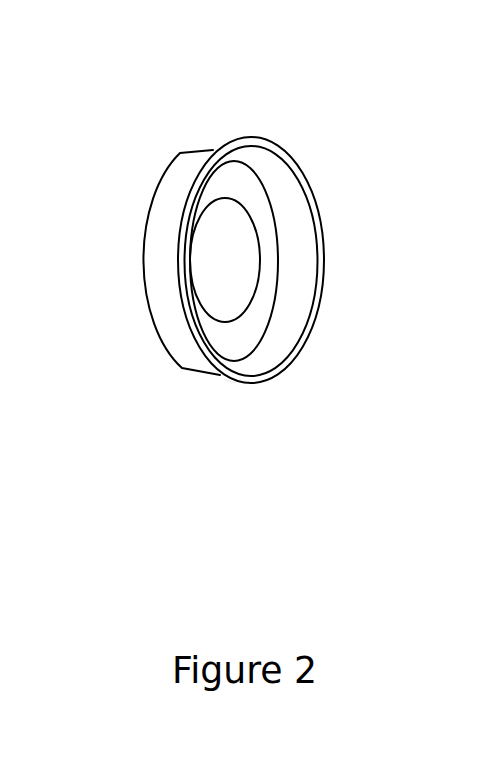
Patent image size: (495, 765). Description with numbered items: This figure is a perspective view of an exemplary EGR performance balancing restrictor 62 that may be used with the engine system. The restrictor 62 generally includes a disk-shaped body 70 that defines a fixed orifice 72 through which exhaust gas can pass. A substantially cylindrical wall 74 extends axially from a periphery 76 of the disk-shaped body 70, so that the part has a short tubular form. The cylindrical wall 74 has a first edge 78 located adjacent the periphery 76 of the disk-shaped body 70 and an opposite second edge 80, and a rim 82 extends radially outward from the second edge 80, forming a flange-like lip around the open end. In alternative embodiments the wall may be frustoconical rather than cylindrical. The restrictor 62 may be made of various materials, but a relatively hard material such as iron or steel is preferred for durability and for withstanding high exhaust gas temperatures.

The EGR performance balancing restrictor 62 is at (252, 247).
The disk-shaped body 70 is at (265, 236).
The fixed orifice 72 is at (243, 287).
The substantially cylindrical wall 74 is at (179, 152).
The periphery 76 is at (244, 137).
The first edge 78 is at (182, 372).
The second edge 80 is at (230, 388).
The rim 82 is at (312, 195).